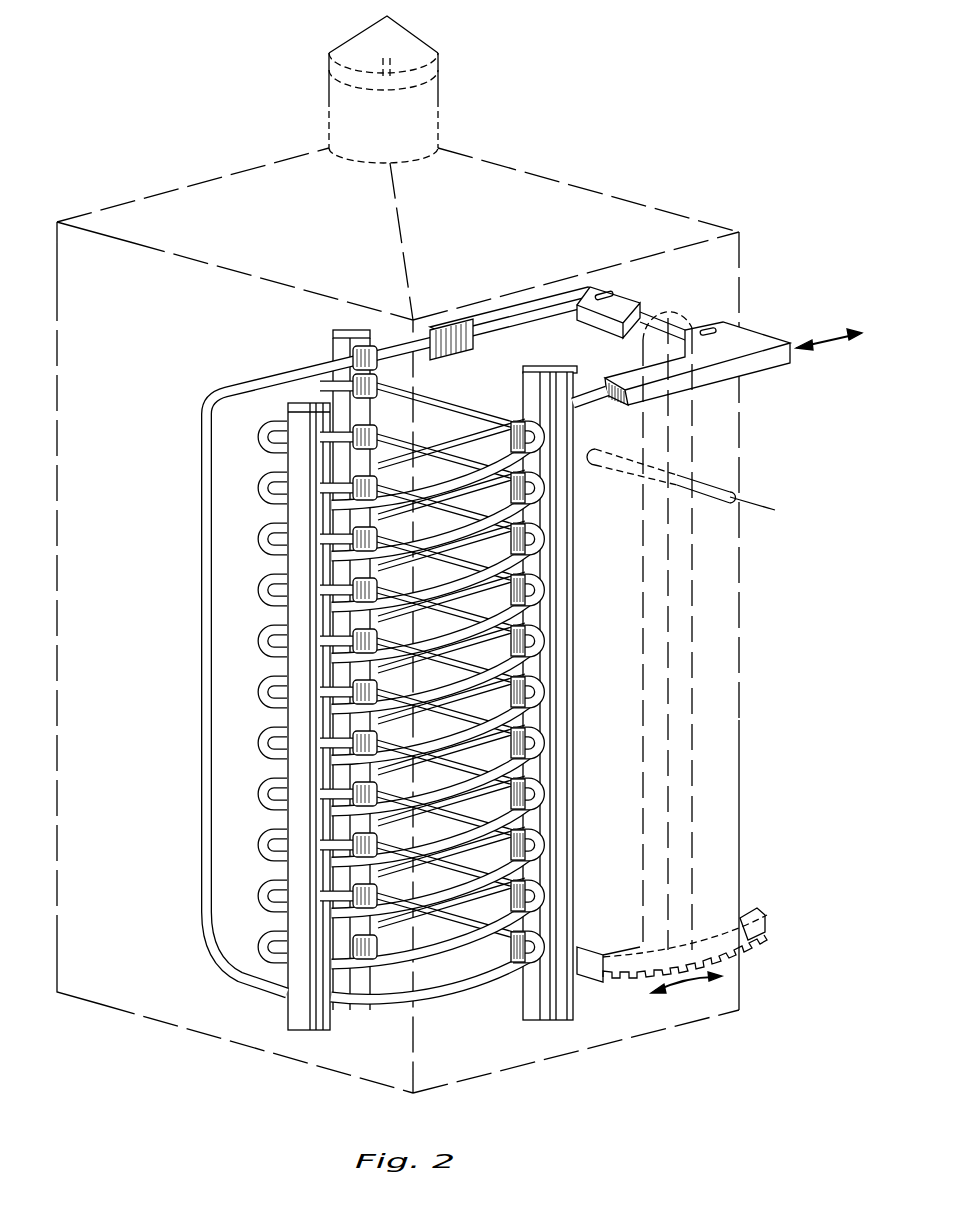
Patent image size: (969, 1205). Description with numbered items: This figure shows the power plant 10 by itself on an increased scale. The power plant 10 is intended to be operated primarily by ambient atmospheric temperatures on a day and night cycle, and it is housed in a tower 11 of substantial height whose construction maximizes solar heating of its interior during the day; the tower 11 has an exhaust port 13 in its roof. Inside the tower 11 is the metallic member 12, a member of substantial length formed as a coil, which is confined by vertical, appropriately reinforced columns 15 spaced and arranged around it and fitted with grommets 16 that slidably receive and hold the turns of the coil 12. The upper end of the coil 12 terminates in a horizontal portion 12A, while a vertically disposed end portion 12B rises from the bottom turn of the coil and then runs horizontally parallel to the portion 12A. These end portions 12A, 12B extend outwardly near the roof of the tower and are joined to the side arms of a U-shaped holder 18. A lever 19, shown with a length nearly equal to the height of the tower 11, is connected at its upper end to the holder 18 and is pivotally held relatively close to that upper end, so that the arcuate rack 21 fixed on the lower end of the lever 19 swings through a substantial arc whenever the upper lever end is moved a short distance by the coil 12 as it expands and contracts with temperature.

The power plant 10 is at (626, 201).
The tower 11 is at (735, 703).
The metallic member 12 is at (258, 645).
The horizontal portion 12A is at (590, 398).
The vertically disposed end portion 12B is at (211, 408).
The exhaust port 13 is at (438, 133).
The columns 15 is at (530, 1000).
The grommets 16 is at (345, 363).
The U-shaped holder 18 is at (512, 312).
The lever 19 is at (695, 600).
The arcuate rack 21 is at (770, 928).